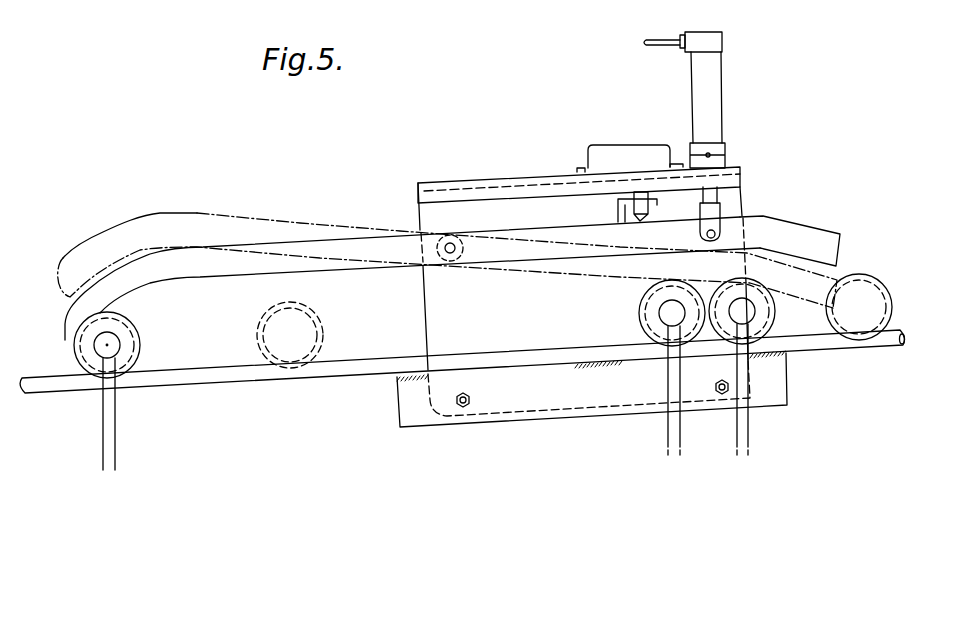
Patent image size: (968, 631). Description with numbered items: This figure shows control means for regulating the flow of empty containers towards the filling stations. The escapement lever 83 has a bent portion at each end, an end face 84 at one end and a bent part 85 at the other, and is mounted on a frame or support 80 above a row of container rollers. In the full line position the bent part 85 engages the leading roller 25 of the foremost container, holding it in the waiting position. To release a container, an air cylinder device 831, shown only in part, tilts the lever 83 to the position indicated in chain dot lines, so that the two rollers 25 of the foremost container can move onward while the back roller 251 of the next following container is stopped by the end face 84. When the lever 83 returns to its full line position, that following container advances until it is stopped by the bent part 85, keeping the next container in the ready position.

The leading roller 25 is at (139, 345).
The back roller 251 is at (880, 287).
The support frame 80 is at (513, 360).
The escapement lever 83 is at (272, 247).
The air cylinder device 831 is at (713, 107).
The end face 84 is at (842, 245).
The bent part 85 is at (115, 282).